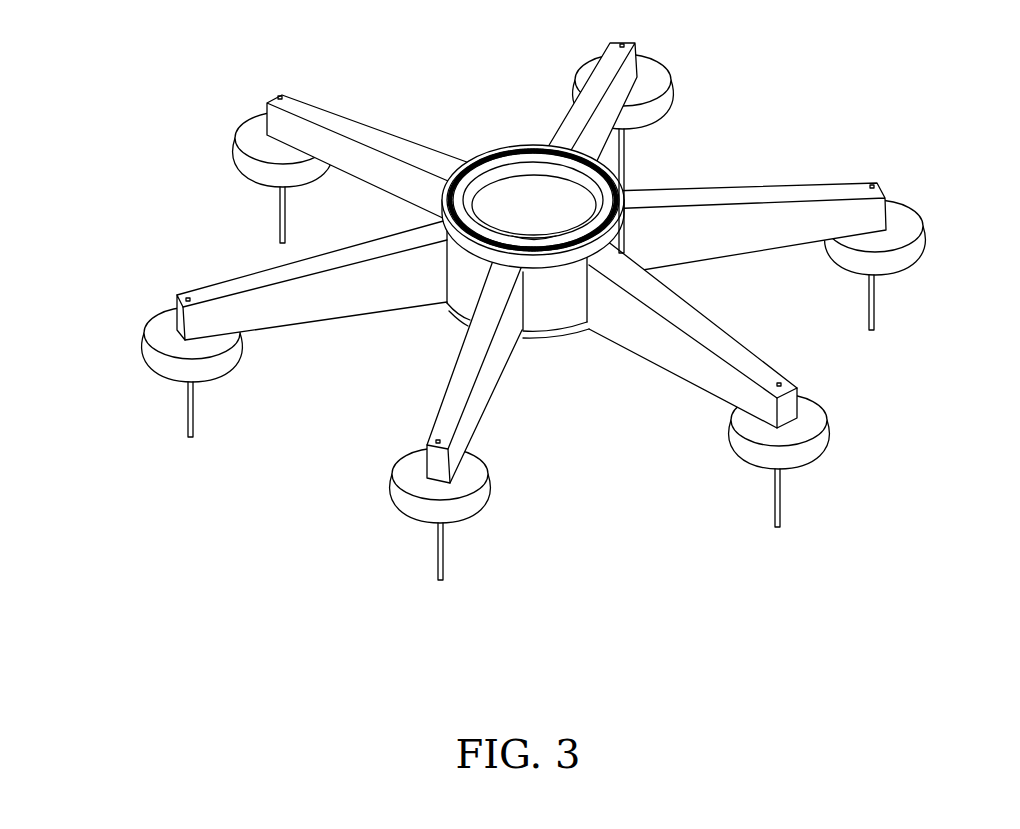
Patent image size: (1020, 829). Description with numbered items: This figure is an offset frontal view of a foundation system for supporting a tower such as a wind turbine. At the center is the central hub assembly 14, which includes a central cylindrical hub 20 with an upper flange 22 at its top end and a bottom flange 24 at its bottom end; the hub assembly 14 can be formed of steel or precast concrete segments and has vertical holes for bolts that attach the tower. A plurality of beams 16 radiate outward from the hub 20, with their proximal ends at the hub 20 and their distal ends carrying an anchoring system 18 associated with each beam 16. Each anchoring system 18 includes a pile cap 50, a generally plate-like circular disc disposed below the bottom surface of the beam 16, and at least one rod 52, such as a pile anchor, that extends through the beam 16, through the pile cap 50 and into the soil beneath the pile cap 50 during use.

The central hub assembly 14 is at (511, 317).
The beam 16 is at (383, 140).
The anchoring system 18 is at (529, 314).
The central cylindrical hub 20 is at (470, 288).
The upper flange 22 is at (443, 197).
The bottom flange 24 is at (580, 337).
The pile cap 50 is at (220, 367).
The rod 52 is at (785, 512).